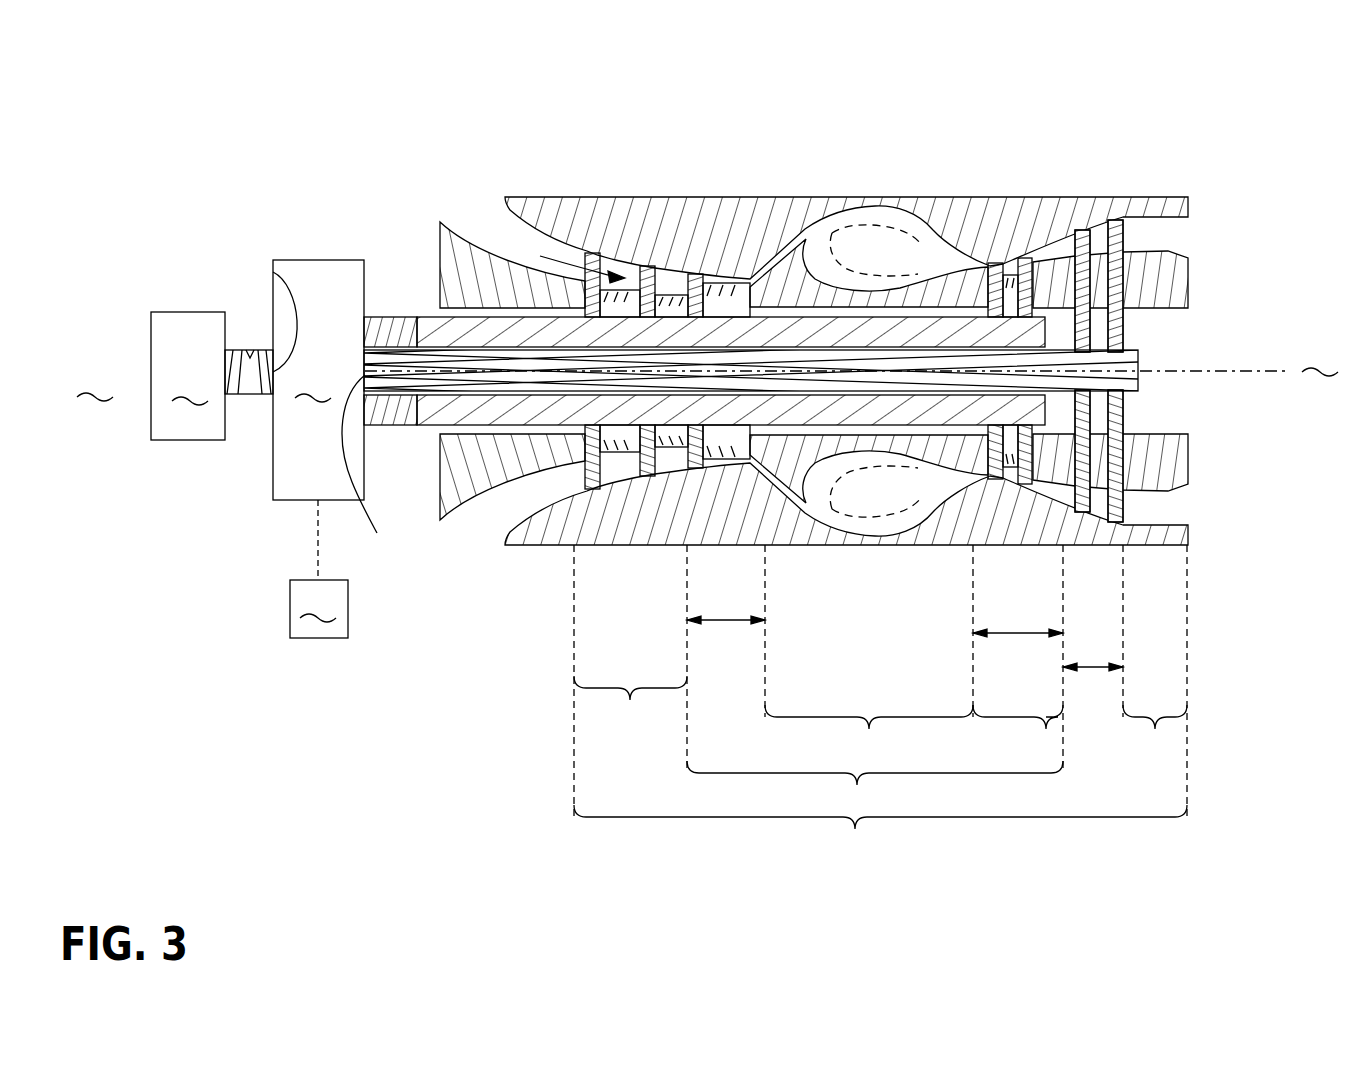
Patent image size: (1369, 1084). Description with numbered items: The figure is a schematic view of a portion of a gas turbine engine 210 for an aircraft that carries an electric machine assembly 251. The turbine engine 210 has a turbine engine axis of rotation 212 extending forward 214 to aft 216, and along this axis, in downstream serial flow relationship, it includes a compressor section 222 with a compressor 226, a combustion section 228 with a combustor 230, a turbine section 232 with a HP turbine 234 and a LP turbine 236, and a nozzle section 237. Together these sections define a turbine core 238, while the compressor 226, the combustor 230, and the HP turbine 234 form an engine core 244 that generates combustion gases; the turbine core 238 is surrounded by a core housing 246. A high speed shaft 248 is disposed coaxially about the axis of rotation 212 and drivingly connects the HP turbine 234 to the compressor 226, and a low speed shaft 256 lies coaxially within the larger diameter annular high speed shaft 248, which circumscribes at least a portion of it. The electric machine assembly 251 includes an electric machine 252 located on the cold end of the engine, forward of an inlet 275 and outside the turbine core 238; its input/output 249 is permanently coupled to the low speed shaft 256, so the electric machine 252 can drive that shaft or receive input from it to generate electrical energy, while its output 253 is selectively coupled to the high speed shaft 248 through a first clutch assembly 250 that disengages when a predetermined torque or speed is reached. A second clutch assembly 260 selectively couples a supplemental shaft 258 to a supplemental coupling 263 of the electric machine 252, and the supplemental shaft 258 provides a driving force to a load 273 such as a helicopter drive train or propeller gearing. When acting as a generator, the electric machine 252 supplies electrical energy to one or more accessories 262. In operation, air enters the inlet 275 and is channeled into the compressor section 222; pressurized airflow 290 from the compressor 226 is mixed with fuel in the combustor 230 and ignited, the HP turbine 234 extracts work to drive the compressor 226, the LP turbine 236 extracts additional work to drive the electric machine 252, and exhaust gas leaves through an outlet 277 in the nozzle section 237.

The gas turbine engine 210 is at (746, 110).
The turbine engine axis of rotation 212 is at (1222, 375).
The forward 214 is at (95, 383).
The aft 216 is at (1320, 358).
The compressor section 222 is at (669, 535).
The compressor 226 is at (725, 620).
The combustion section 228 is at (869, 732).
The combustor 230 is at (880, 205).
The turbine section 232 is at (1018, 515).
The HP turbine 234 is at (1020, 633).
The LP turbine 236 is at (1095, 667).
The nozzle section 237 is at (1131, 518).
The turbine core 238 is at (880, 831).
The engine core 244 is at (875, 786).
The core housing 246 is at (958, 197).
The high speed shaft 248 is at (417, 317).
The input/output 249 is at (377, 533).
The first clutch assembly 250 is at (407, 317).
The electric machine assembly 251 is at (290, 258).
The electric machine 252 is at (318, 380).
The output 253 is at (365, 332).
The low speed shaft 256 is at (1140, 352).
The supplemental shaft 258 is at (240, 395).
The second clutch assembly 260 is at (258, 352).
The accessories 262 is at (319, 569).
The supplemental coupling 263 is at (273, 272).
The load 273 is at (188, 376).
The inlet 275 is at (512, 222).
The outlet 277 is at (1190, 212).
The pressurized airflow 290 is at (568, 268).